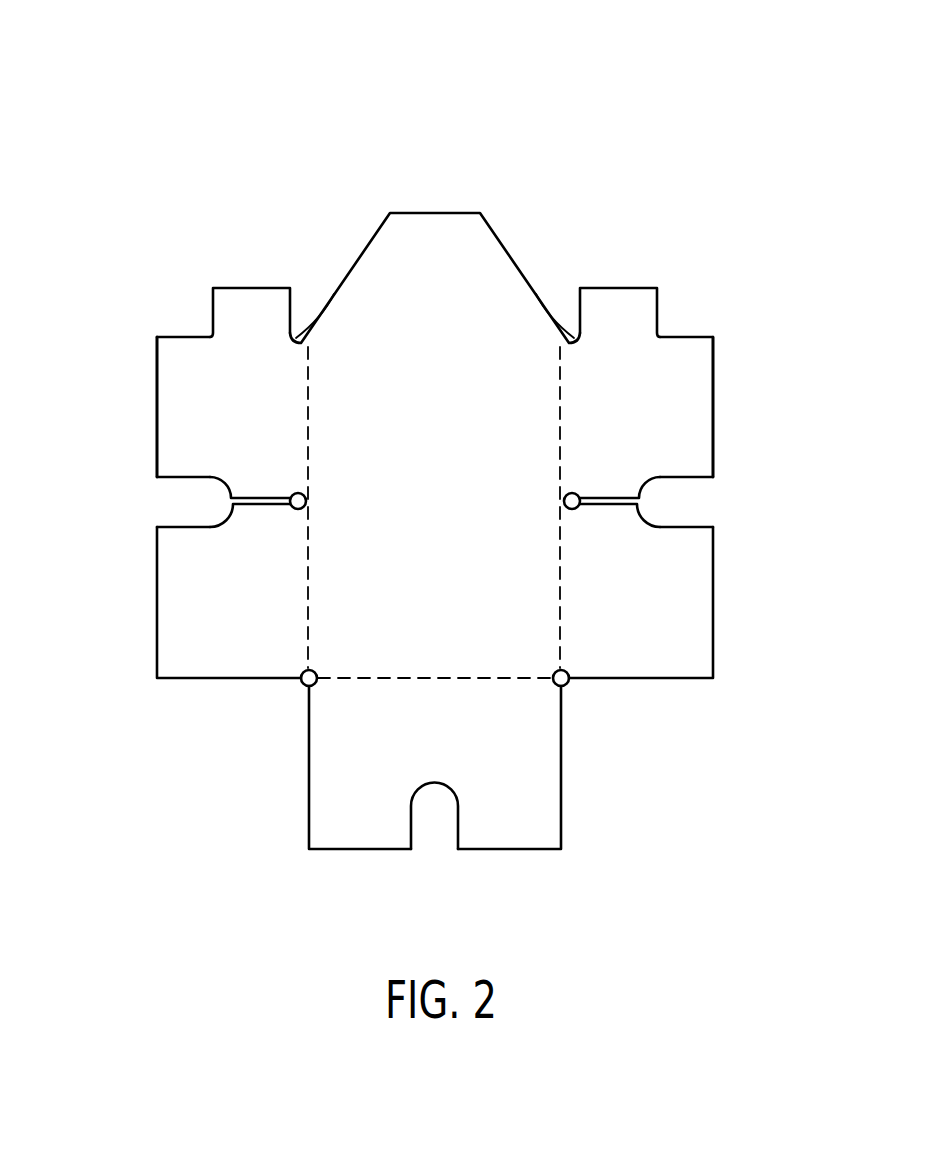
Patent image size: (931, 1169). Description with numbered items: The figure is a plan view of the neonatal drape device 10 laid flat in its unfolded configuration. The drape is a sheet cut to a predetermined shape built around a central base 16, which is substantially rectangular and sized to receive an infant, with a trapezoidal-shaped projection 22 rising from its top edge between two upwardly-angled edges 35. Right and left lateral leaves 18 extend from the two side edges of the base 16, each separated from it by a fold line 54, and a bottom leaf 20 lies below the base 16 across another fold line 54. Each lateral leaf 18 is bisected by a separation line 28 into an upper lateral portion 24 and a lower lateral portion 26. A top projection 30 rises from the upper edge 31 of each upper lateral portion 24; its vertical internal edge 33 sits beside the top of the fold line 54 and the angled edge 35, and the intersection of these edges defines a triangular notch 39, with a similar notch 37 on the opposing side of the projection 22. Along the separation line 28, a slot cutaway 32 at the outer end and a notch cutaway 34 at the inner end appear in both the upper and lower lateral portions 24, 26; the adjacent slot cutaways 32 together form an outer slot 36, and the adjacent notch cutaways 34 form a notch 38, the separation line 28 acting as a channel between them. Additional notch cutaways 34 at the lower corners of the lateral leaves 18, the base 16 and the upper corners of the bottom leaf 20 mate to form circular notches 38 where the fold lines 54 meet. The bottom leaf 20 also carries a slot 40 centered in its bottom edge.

The neonatal drape device 10 is at (230, 146).
The central base 16 is at (447, 495).
The lateral leaves 18 is at (227, 734).
The bottom leaf 20 is at (497, 780).
The trapezoidal-shaped projection 22 is at (433, 265).
The upper lateral portion 24 is at (190, 383).
The lower lateral portion 26 is at (230, 628).
The separation line 28 is at (227, 507).
The top projection 30 is at (243, 310).
The upper edge 31 is at (168, 337).
The slot cutaway 32 is at (167, 477).
The vertical internal edge 33 is at (292, 307).
The notch cutaway 34 is at (290, 496).
The upwardly-angled edge 35 is at (362, 252).
The outer slot 36 is at (186, 505).
The notch 37 is at (543, 306).
The notch 38 is at (309, 501).
The triangular notch 39 is at (333, 296).
The slot 40 is at (432, 819).
The fold line 54 is at (317, 380).